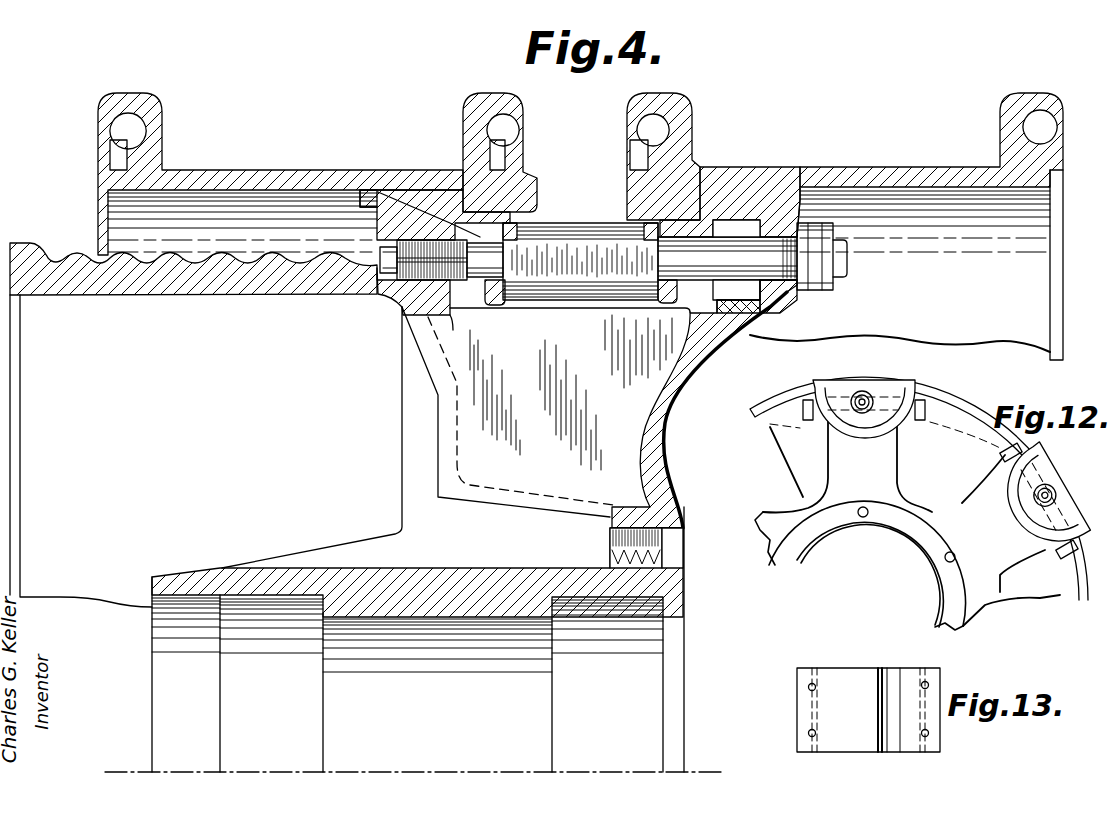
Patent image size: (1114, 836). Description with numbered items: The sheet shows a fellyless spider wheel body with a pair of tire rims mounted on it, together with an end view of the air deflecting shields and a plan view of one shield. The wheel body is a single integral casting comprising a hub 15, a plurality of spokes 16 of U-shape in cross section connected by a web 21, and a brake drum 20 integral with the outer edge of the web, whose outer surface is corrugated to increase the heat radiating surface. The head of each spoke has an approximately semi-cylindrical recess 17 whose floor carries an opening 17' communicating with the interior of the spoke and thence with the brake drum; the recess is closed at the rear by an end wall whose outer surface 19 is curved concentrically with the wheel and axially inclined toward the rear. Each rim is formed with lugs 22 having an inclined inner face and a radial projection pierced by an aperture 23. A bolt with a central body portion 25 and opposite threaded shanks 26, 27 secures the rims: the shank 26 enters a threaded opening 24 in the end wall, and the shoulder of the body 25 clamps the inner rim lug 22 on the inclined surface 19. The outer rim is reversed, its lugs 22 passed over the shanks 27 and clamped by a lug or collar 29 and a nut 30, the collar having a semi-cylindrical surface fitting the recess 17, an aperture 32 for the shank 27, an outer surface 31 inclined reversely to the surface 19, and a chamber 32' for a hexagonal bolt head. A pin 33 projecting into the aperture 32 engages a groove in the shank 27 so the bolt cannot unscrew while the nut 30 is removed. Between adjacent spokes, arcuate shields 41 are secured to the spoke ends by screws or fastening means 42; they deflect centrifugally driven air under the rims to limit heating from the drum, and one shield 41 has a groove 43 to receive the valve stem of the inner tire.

In FIG. 4, the hub 15 is at (482, 583).
In FIG. 4, the spokes 16 is at (663, 443).
In FIG. 4, the recess 17 is at (490, 434).
In FIG. 4, the opening 17' is at (570, 389).
In FIG. 4, the outer surface 19 is at (385, 193).
In FIG. 4, the brake drum 20 is at (192, 277).
In FIG. 4, the web 21 is at (450, 440).
In FIG. 4, the lugs 22 is at (423, 190).
In FIG. 4, the aperture 23 is at (712, 205).
In FIG. 4, the threaded openings 24 is at (427, 282).
In FIG. 4, the central body portion 25 is at (553, 253).
In FIG. 4, the threaded shank 26 is at (517, 165).
In FIG. 4, the threaded shank 27 is at (707, 270).
In FIG. 4, the lug or collar 29 is at (783, 307).
In FIG. 4, the nut 30 is at (818, 287).
In FIG. 4, the outer surface 31 is at (753, 195).
In FIG. 4, the aperture 32 is at (736, 230).
In FIG. 4, the chamber 32' is at (736, 290).
In FIG. 4, the pin 33 is at (772, 315).
In FIG. 12, the arcuate shields 41 is at (927, 403).
In FIG. 13, the arcuate shields 41 is at (837, 680).
In FIG. 12, the screws or fastening means 42 is at (1008, 458).
In FIG. 12, the groove 43 is at (1007, 420).
In FIG. 13, the groove 43 is at (890, 677).